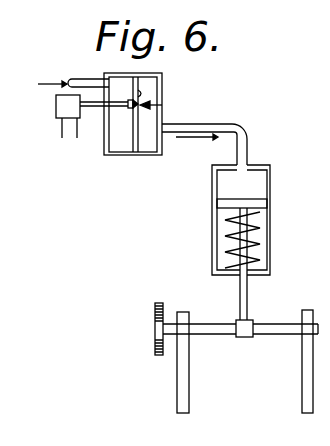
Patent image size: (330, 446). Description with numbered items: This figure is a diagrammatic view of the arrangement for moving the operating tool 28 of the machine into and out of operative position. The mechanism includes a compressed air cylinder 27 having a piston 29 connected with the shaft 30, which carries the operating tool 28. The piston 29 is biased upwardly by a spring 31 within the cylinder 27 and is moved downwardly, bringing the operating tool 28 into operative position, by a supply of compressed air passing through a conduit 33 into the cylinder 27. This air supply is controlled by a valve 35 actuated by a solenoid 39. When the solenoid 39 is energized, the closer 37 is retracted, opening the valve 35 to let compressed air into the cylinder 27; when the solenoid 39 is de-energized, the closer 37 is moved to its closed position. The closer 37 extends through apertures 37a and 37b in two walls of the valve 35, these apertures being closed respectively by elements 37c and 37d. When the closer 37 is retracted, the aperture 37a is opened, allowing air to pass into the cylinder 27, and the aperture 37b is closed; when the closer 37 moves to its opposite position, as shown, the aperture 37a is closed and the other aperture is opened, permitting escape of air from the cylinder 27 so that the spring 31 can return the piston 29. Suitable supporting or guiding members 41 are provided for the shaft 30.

The valve 35 is at (163, 87).
The closer 37 is at (97, 112).
The aperture 37a is at (125, 90).
The aperture 37b is at (160, 104).
The closing element 37c is at (132, 110).
The closing element 37d is at (152, 105).
The solenoid 39 is at (56, 108).
The conduit 33 is at (222, 124).
The compressed air cylinder 27 is at (270, 193).
The spring 31 is at (230, 227).
The piston 29 is at (238, 249).
The shaft 30 is at (220, 336).
The operating tool 28 is at (155, 347).
The supporting or guiding members 41 is at (177, 387).